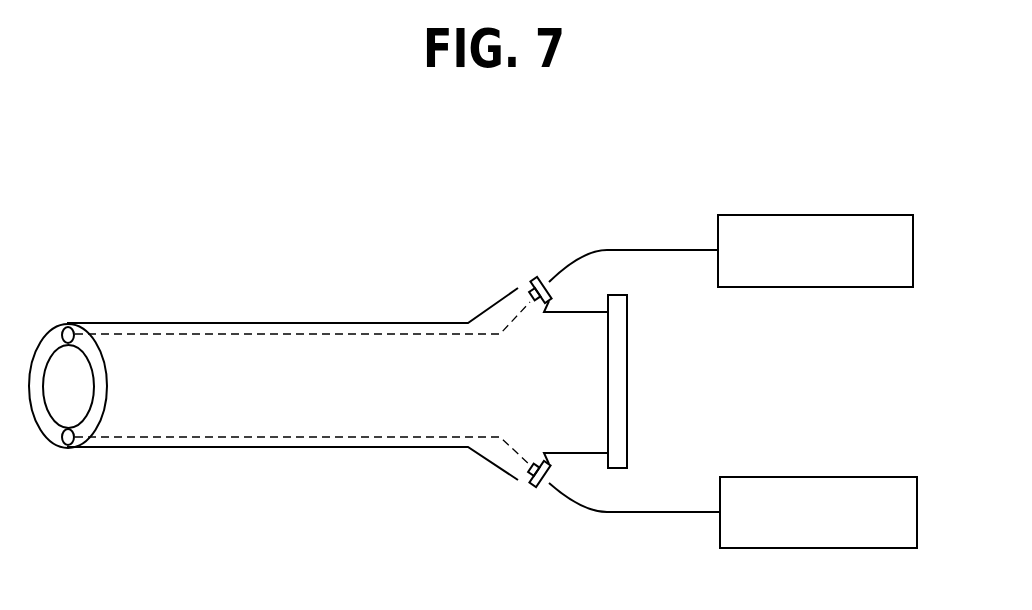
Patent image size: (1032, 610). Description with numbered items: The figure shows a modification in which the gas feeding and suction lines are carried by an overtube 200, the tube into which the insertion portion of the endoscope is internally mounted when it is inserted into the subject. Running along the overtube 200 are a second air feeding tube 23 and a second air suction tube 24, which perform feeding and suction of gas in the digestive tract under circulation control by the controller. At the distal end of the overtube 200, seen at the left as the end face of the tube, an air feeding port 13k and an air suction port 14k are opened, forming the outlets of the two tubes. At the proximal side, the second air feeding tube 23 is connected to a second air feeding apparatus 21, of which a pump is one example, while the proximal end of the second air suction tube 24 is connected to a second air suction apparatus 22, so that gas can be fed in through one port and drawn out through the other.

The air feeding port 13k is at (68, 325).
The air suction port 14k is at (68, 447).
The second air feeding tube 23 is at (339, 333).
The second air suction tube 24 is at (406, 437).
The overtube 200 is at (280, 413).
The second air feeding apparatus 21 is at (815, 215).
The second air suction apparatus 22 is at (818, 477).